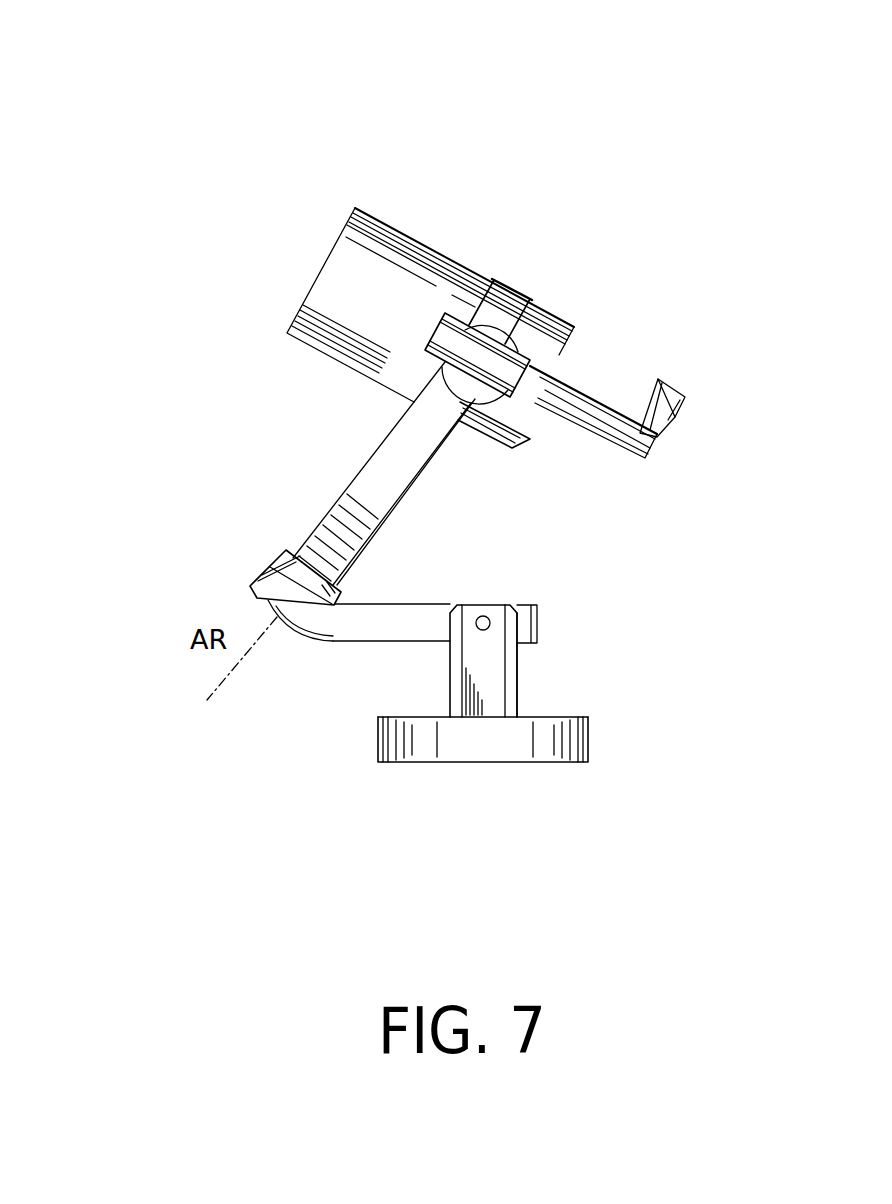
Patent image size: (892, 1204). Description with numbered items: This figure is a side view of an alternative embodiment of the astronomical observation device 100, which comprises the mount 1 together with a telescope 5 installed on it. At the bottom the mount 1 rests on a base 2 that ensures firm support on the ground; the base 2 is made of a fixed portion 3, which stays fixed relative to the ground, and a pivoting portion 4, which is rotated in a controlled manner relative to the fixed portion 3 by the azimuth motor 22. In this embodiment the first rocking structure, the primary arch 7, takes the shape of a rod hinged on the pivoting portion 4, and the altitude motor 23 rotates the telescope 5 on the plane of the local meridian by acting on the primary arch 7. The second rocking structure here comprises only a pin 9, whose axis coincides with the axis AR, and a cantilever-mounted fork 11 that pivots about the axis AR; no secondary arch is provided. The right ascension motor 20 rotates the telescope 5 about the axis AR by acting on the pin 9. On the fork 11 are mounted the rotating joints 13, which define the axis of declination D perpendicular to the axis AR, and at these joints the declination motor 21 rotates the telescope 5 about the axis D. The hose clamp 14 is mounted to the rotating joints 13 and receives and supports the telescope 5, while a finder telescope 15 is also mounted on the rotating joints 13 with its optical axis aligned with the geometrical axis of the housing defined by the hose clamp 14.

The astronomical observation device 100 is at (336, 133).
The mount 1 is at (238, 336).
The telescope 5 is at (453, 253).
The declination motor 21 is at (505, 293).
The rotating joints 13 is at (480, 393).
The hose clamp 14 is at (524, 292).
The finder telescope 15 is at (538, 340).
The fork 11 is at (365, 468).
The right ascension motor 20 is at (280, 556).
The pin 9 is at (273, 617).
The primary arch 7 is at (337, 641).
The pivoting portion 4 is at (518, 693).
The altitude motor 23 is at (518, 665).
The azimuth motor 22 is at (438, 717).
The fixed portion 3 is at (590, 750).
The base 2 is at (590, 720).